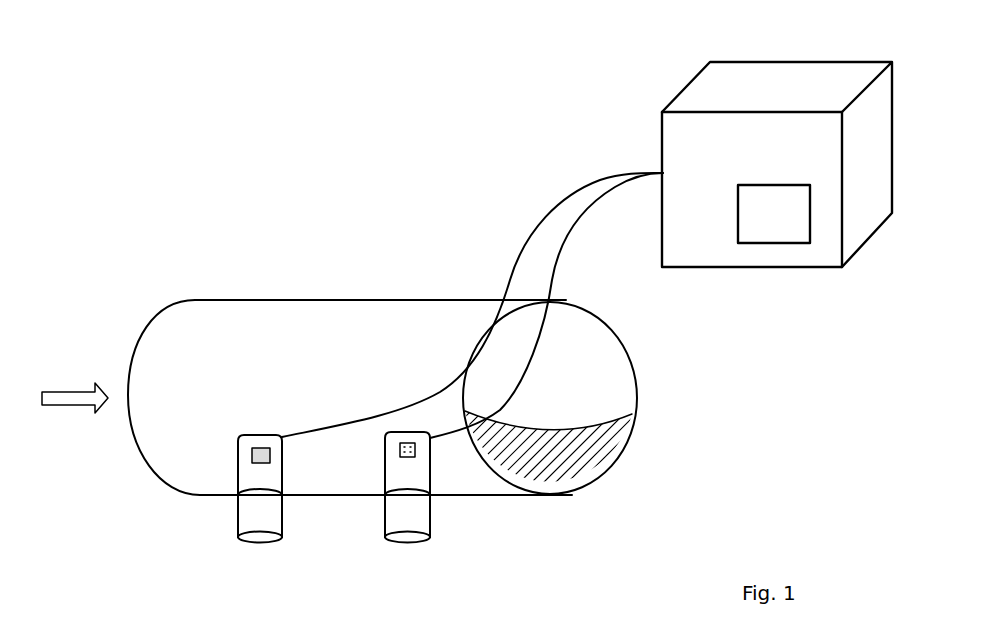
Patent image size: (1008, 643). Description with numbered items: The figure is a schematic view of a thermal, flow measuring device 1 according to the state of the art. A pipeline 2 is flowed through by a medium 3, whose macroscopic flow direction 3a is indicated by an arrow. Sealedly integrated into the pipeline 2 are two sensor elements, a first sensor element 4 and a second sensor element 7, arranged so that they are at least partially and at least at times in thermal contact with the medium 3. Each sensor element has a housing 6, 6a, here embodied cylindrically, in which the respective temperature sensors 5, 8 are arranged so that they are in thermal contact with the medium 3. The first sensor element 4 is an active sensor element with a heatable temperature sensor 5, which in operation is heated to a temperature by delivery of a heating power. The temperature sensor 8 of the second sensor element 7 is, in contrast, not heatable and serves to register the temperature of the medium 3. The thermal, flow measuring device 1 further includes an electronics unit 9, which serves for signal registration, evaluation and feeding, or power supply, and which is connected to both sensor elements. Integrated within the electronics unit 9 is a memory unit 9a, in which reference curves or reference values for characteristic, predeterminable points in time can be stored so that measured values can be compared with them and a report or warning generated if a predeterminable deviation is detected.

The thermal, flow measuring device 1 is at (143, 107).
The pipeline 2 is at (155, 307).
The medium 3 is at (572, 468).
The macroscopic flow direction 3a is at (62, 402).
The first sensor element 4 is at (233, 555).
The heatable temperature sensor 5 is at (252, 453).
The housing 6 is at (263, 510).
The housing 6a is at (428, 518).
The second sensor element 7 is at (392, 552).
The temperature sensor 8 is at (405, 457).
The electronics unit 9 is at (700, 97).
The memory unit 9a is at (760, 250).